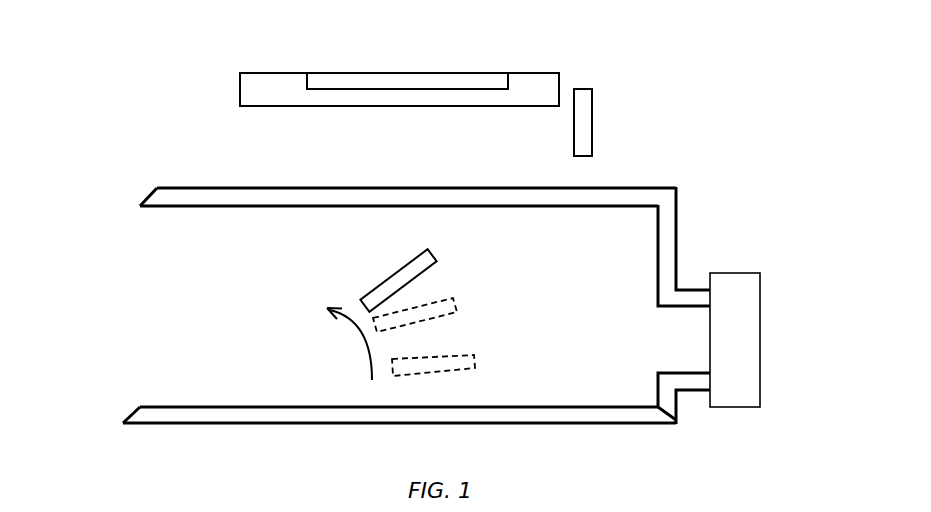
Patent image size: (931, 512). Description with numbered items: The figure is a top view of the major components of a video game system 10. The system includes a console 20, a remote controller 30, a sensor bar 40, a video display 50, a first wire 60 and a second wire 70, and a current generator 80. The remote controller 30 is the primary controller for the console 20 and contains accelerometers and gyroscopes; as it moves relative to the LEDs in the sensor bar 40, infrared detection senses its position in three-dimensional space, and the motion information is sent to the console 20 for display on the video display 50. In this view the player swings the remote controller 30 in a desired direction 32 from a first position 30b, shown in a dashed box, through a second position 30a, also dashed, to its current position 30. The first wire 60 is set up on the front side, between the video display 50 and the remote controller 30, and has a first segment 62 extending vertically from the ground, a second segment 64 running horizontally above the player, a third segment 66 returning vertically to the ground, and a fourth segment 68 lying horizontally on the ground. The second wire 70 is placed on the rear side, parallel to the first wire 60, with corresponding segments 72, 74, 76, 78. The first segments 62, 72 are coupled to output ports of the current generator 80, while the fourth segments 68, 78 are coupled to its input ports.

The video game system 10 is at (683, 55).
The console 20 is at (592, 120).
The remote controller 30 is at (432, 257).
The second position 30a is at (445, 299).
The first position 30b is at (460, 367).
The desired direction 32 is at (357, 327).
The sensor bar 40 is at (318, 72).
The video display 50 is at (532, 73).
The first wire 60 is at (423, 226).
The first segment 62 is at (677, 188).
The second segment 64 is at (377, 187).
The third segment 66 is at (140, 205).
The fourth segment 68 is at (537, 205).
The second wire 70 is at (406, 411).
The first segment 72 is at (675, 410).
The second segment 74 is at (278, 410).
The third segment 76 is at (138, 405).
The fourth segment 78 is at (430, 427).
The current generator 80 is at (720, 273).